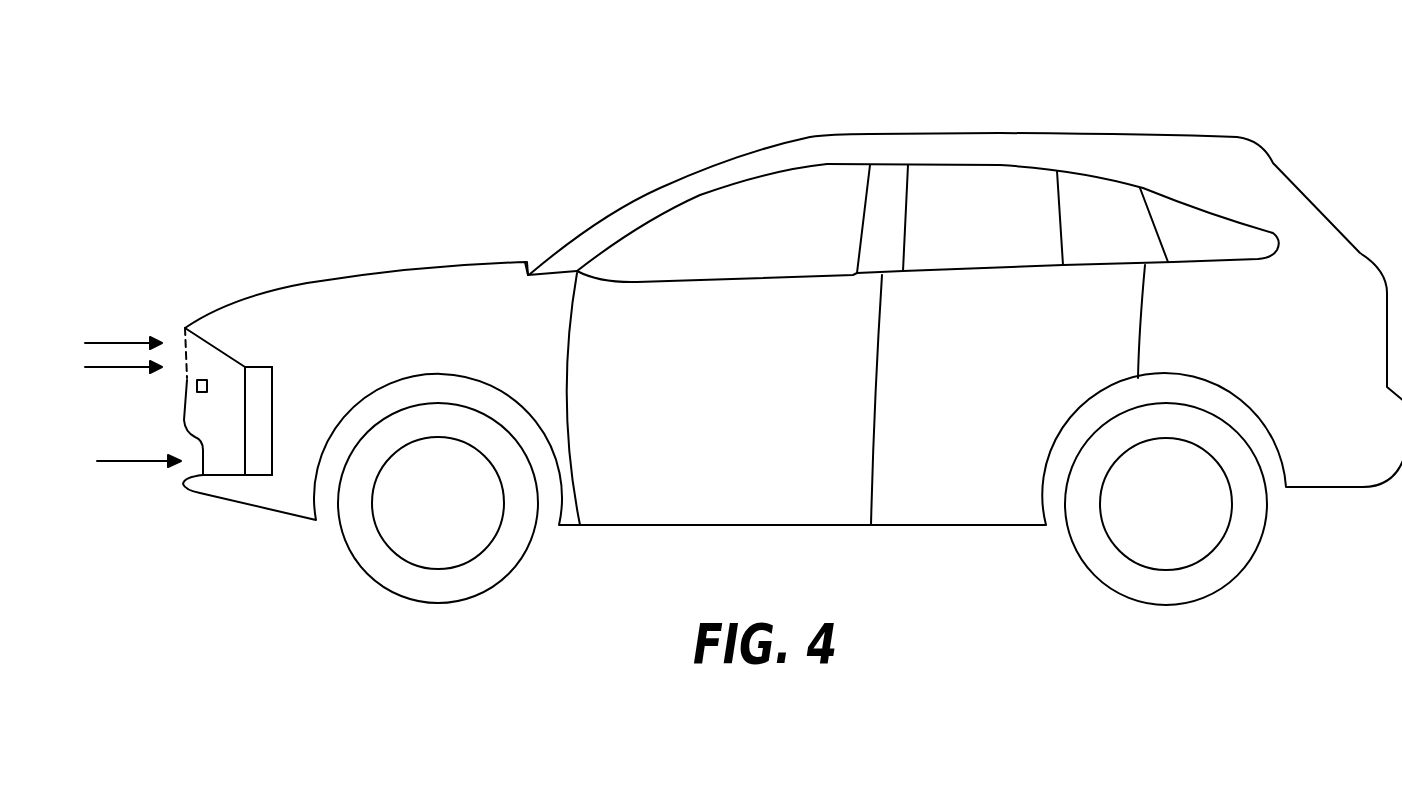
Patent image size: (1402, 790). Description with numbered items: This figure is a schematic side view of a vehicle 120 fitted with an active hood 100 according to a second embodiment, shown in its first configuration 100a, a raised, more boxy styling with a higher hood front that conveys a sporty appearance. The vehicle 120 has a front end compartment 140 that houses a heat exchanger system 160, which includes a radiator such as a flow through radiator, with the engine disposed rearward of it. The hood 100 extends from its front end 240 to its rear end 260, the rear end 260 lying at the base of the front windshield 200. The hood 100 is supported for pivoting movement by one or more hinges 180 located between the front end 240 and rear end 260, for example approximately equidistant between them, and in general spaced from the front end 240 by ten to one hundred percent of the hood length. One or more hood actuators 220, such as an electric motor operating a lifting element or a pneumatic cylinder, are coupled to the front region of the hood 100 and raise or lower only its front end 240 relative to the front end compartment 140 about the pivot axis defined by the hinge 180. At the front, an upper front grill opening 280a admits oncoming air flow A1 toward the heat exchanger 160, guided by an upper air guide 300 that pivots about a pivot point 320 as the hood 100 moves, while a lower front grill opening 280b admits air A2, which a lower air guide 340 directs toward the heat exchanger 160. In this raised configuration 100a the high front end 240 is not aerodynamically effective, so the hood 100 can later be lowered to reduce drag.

The active hood 100 is at (327, 252).
The first configuration 100a is at (165, 312).
The vehicle 120 is at (957, 131).
The front end compartment 140 is at (367, 344).
The heat exchanger system 160 is at (260, 422).
The hinge 180 is at (307, 283).
The front windshield 200 is at (660, 187).
The hood actuator 220 is at (196, 386).
The front end 240 is at (208, 313).
The rear end 260 is at (513, 261).
The upper front grill opening 280a is at (183, 342).
The lower front grill opening 280b is at (202, 465).
The upper air guide 300 is at (215, 345).
The pivot point 320 is at (247, 366).
The lower air guide 340 is at (225, 478).
The air flow A1 is at (112, 355).
The air A2 is at (125, 464).